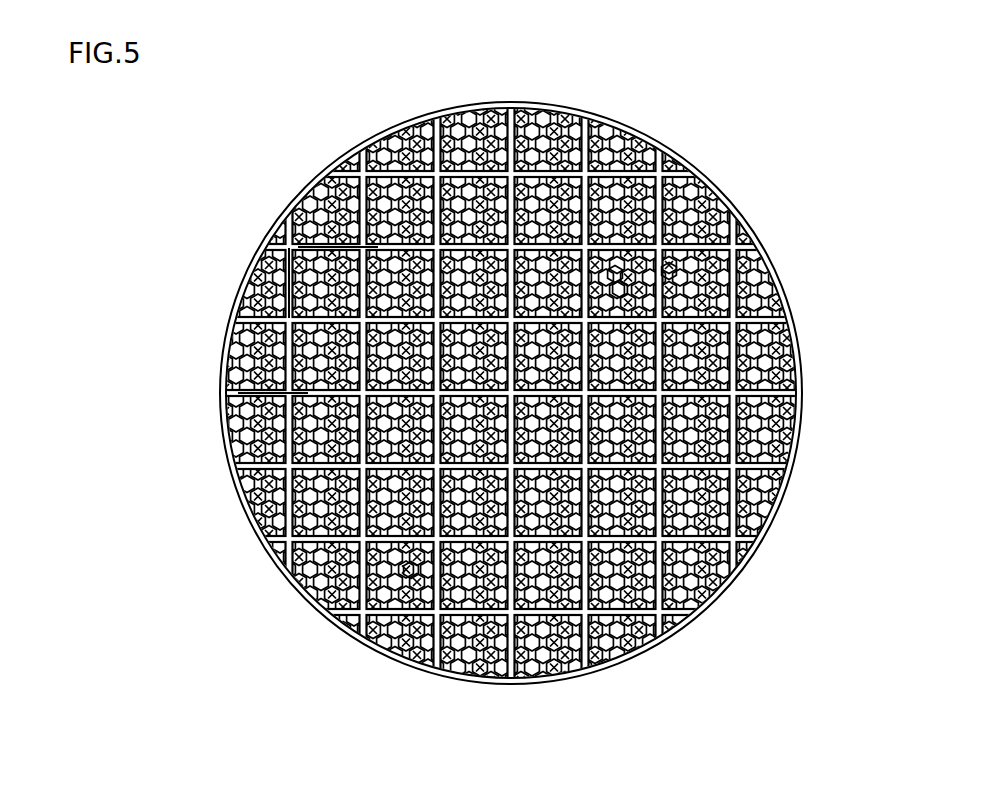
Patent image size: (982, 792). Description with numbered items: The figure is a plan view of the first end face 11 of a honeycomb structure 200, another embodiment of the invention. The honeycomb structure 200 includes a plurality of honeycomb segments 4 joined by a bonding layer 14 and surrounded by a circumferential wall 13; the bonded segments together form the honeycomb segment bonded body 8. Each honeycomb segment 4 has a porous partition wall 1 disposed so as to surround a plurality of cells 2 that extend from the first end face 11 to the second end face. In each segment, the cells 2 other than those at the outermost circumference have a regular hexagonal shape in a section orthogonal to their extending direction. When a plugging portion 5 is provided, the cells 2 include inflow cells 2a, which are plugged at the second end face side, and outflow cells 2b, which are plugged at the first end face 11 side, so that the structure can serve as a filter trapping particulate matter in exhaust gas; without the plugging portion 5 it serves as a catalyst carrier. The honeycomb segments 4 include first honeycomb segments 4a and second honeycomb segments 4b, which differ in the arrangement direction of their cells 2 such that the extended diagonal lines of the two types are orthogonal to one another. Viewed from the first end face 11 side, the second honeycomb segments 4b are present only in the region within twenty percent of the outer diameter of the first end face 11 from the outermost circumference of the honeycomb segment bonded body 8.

The honeycomb structure 200 is at (858, 34).
The first end face 11 is at (260, 176).
The partition wall 1 is at (636, 266).
The cells 2 is at (714, 217).
The inflow cells 2a is at (663, 258).
The outflow cells 2b is at (618, 281).
The honeycomb segments 4 is at (235, 261).
The first honeycomb segments 4a is at (318, 282).
The second honeycomb segments 4b is at (368, 197).
The plugging portion 5 is at (610, 263).
The honeycomb segment bonded body 8 is at (777, 291).
The circumferential wall 13 is at (731, 563).
The bonding layer 14 is at (400, 566).